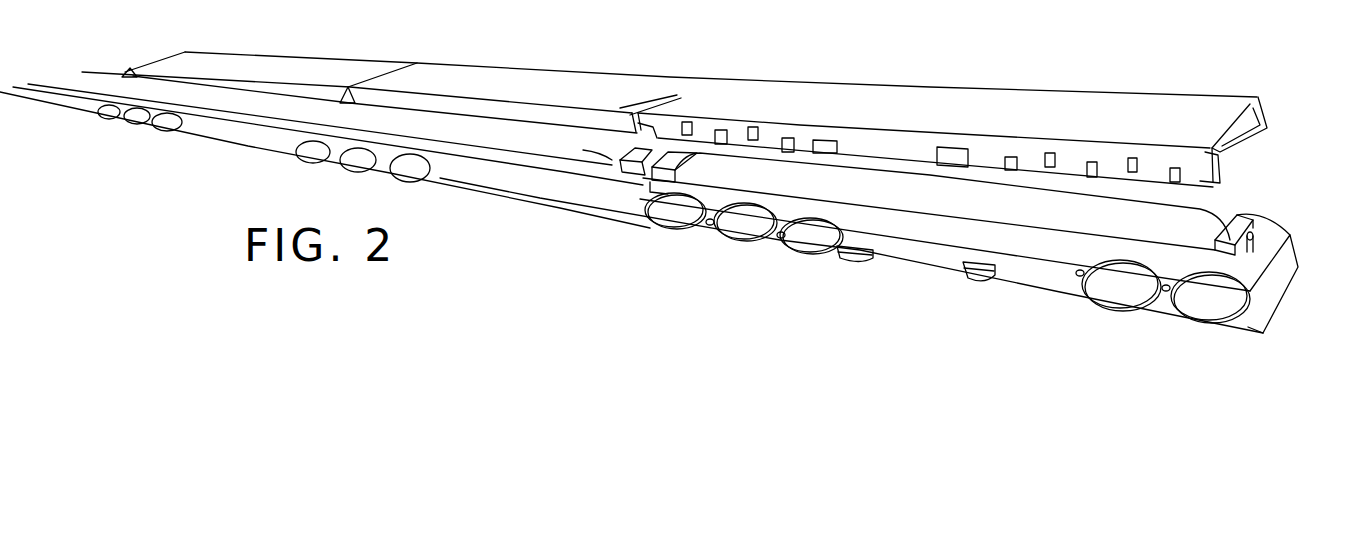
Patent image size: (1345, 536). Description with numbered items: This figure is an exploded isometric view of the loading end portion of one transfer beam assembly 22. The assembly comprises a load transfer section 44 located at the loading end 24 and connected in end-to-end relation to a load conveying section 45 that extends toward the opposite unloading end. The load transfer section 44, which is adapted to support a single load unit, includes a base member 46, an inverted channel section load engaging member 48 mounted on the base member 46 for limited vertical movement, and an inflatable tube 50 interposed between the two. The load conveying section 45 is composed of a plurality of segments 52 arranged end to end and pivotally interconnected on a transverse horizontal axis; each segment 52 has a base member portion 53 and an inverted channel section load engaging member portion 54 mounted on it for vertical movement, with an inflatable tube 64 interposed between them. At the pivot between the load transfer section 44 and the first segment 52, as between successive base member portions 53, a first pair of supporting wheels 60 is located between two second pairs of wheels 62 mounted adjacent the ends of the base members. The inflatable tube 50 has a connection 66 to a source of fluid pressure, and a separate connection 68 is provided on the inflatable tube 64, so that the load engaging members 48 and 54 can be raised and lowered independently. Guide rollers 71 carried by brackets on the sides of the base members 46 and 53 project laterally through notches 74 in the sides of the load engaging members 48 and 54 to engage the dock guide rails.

The transfer beam assembly 22 is at (507, 62).
The loading end 24 is at (1268, 213).
The load transfer section 44 is at (955, 82).
The load conveying section 45 is at (306, 55).
The base member 46 is at (1065, 288).
The load engaging member 48 is at (1110, 92).
The inflatable tube 50 is at (1217, 197).
The segment 52 is at (330, 55).
The base member portion 53 is at (248, 148).
The load engaging member portion 54 is at (312, 80).
The first pair of supporting wheels 60 is at (740, 245).
The second pairs of wheels 62 is at (670, 230).
The inflatable tube 64 is at (498, 147).
The connection 66 is at (1250, 242).
The connection 68 is at (636, 162).
The guide rollers 71 is at (858, 262).
The notches 74 is at (840, 140).